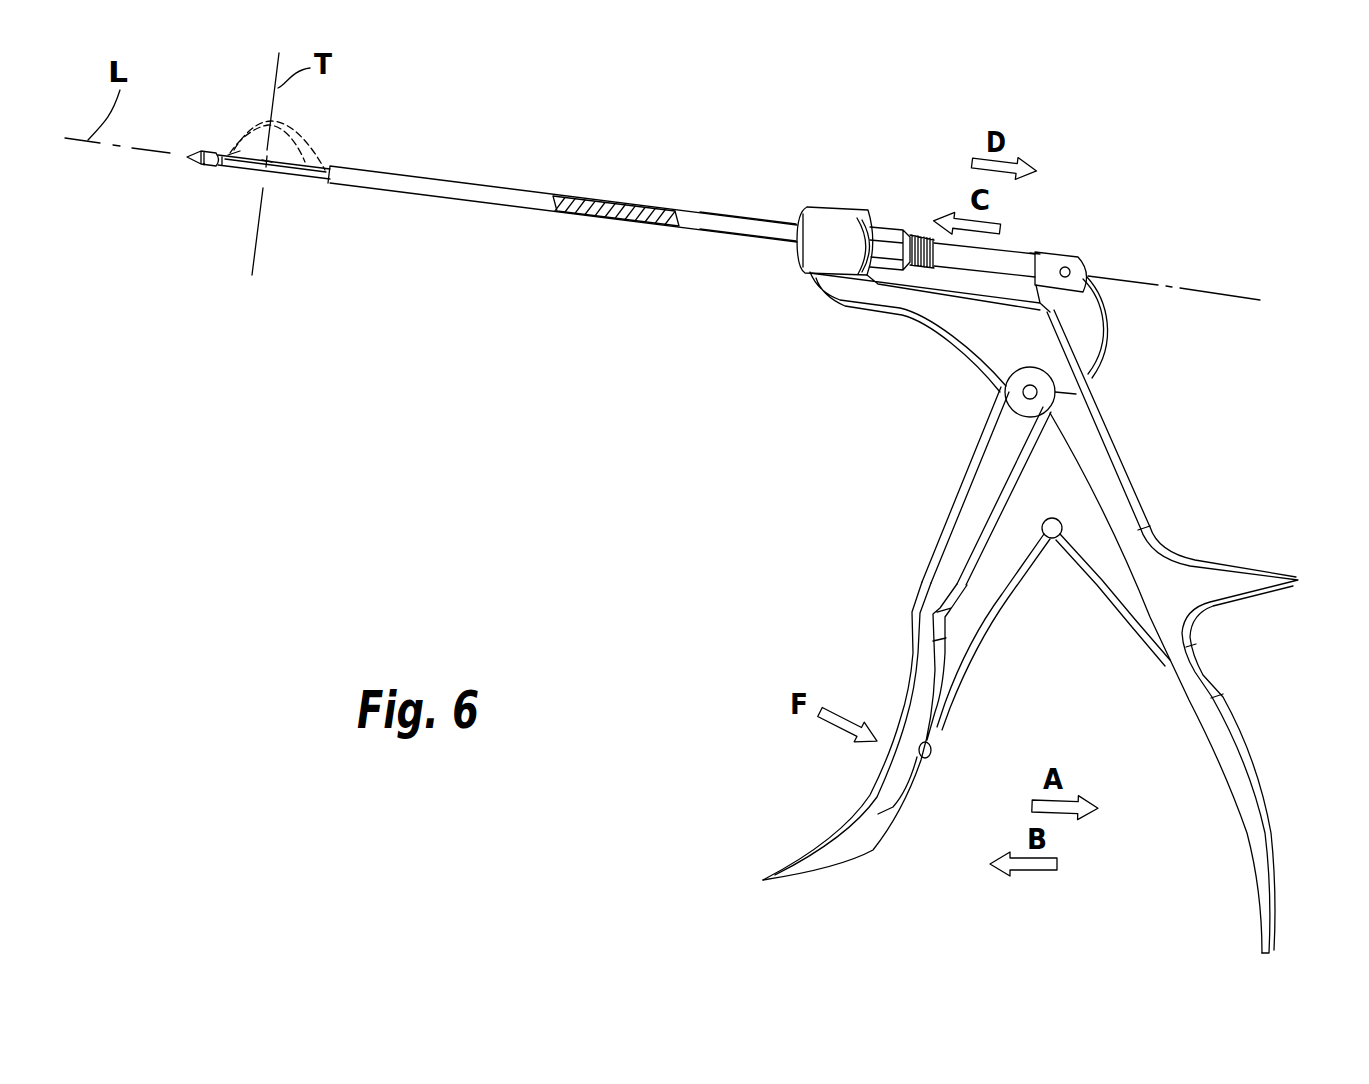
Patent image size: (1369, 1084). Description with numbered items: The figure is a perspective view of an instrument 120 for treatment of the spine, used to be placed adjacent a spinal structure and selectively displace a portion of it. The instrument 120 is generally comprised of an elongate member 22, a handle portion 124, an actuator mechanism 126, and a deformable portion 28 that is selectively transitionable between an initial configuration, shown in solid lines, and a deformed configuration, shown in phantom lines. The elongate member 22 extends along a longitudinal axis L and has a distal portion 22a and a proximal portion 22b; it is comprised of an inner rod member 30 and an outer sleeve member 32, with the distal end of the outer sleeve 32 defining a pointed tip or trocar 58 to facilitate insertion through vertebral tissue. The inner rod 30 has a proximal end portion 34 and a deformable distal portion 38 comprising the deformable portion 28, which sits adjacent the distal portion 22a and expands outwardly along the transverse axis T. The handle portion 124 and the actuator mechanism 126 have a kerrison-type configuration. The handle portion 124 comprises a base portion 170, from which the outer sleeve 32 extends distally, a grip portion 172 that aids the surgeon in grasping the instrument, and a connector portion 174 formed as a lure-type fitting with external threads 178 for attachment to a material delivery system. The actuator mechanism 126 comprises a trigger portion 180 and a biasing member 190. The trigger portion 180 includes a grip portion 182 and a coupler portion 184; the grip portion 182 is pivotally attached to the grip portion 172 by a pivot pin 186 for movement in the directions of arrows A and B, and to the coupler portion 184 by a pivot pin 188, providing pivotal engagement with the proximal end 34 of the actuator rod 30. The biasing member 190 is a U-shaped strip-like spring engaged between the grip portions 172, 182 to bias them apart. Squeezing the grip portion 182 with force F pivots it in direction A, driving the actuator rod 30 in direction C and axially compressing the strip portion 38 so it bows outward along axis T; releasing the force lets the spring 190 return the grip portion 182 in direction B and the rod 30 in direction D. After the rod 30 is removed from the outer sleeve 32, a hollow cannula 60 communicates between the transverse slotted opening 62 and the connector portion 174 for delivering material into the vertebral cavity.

The elongate member 22 is at (627, 153).
The distal portion 22a is at (241, 187).
The proximal portion 22b is at (763, 263).
The deformable portion 28 is at (257, 116).
The inner rod member 30 is at (570, 217).
The outer sleeve member 32 is at (503, 190).
The proximal end portion 34 is at (1068, 247).
The deformable distal portion 38 is at (300, 132).
The pointed tip or trocar 58 is at (187, 163).
The axial passageway / hollow cannula 60 is at (634, 218).
The transverse slotted opening 62 is at (232, 150).
The instrument 120 is at (750, 167).
The handle portion 124 is at (1213, 527).
The actuator mechanism 126 is at (927, 480).
The base portion 170 is at (848, 210).
The grip portion 172 is at (1224, 677).
The connector portion 174 is at (888, 218).
The external threads 178 is at (912, 237).
The trigger portion 180 is at (1118, 340).
The grip portion 182 is at (913, 583).
The coupler portion 184 is at (1080, 260).
The pivot pin 186 is at (1016, 394).
The pivot pin 188 is at (1082, 270).
The biasing member 190 is at (1000, 603).